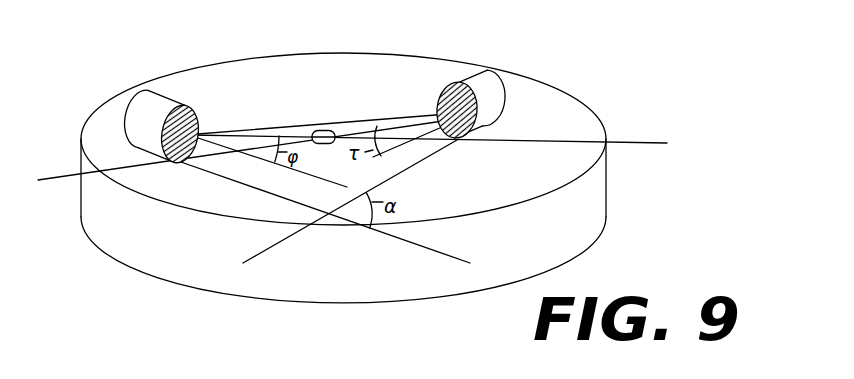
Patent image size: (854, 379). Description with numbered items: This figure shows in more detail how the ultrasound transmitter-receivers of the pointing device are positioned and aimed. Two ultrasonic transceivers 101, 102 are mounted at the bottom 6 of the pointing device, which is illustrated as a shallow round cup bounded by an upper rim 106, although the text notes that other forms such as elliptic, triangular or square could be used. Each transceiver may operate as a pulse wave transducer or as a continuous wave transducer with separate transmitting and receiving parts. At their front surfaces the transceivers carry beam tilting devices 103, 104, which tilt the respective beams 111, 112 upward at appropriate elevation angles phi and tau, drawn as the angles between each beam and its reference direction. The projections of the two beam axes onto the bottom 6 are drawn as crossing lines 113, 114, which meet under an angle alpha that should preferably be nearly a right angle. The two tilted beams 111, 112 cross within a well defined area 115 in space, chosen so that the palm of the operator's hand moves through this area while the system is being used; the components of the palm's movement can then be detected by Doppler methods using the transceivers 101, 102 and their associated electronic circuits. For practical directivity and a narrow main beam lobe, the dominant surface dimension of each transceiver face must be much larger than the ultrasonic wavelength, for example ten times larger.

The bottom 6 is at (90, 242).
The ultrasonic transceiver 101 is at (143, 102).
The ultrasonic transceiver 102 is at (490, 83).
The beam tilting device 103 is at (178, 103).
The beam tilting device 104 is at (458, 83).
The upper rim 106 is at (322, 52).
The beam 111 is at (650, 125).
The beam 112 is at (66, 177).
The beam axis line 113 is at (262, 253).
The beam axis line 114 is at (458, 258).
The area 115 is at (327, 130).